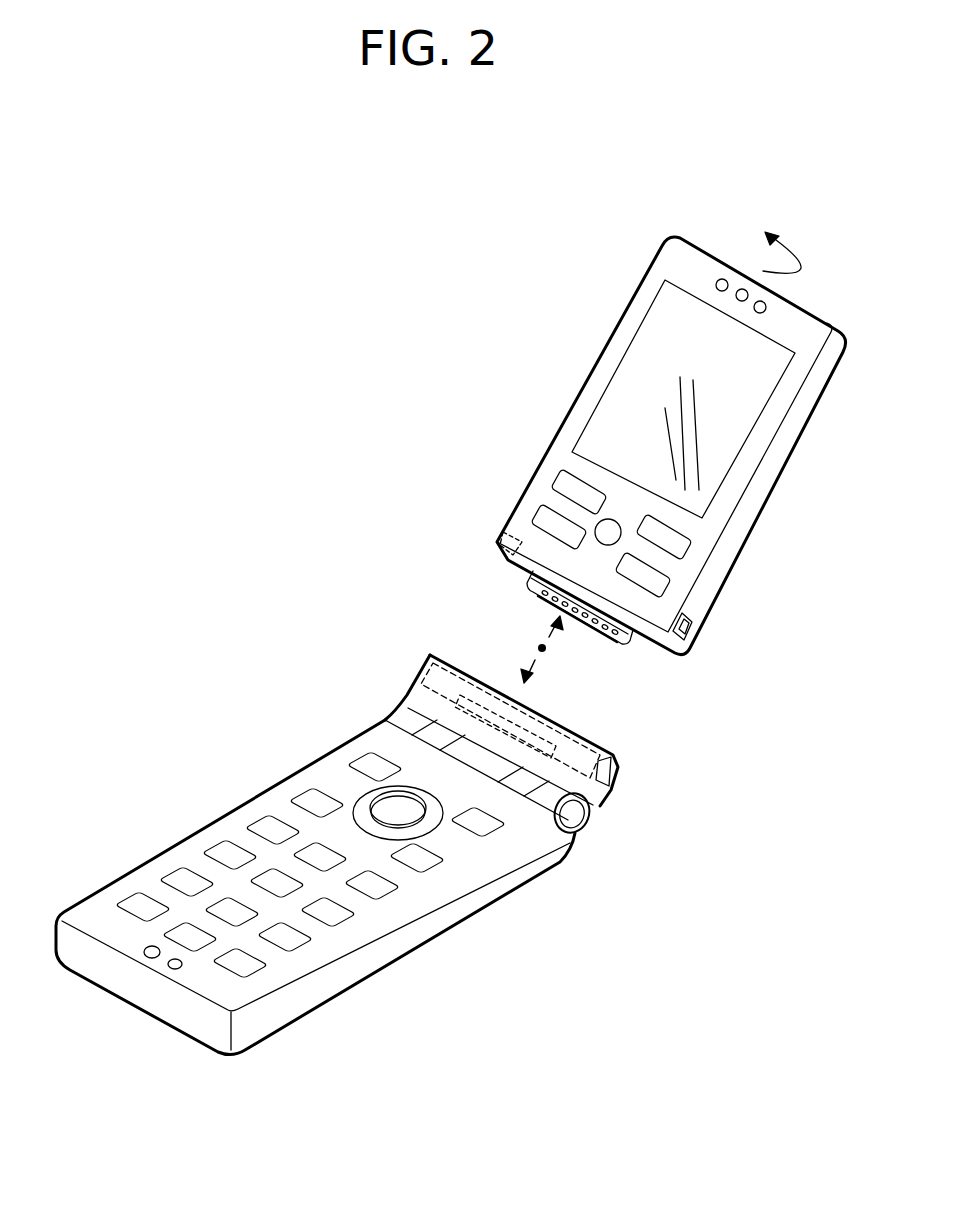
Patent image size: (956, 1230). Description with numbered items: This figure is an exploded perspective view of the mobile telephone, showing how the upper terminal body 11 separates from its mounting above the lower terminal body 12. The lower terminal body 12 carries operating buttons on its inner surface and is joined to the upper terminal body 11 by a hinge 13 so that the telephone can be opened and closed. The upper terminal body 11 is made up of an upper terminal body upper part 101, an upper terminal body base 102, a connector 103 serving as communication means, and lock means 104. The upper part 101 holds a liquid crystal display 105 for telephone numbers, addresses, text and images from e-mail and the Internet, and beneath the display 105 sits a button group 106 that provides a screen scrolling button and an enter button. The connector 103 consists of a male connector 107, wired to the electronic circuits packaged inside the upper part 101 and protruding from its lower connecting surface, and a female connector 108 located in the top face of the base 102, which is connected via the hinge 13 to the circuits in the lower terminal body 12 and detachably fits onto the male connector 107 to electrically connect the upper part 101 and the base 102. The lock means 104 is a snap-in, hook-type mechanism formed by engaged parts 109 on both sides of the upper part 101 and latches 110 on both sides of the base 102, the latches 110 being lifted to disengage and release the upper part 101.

The upper terminal body 11 is at (671, 234).
The lower terminal body 12 is at (392, 940).
The hinge 13 is at (577, 810).
The upper terminal body upper part 101 is at (742, 527).
The upper terminal body base 102 is at (610, 795).
The connector 103 is at (454, 639).
The lock means 104 is at (554, 602).
The liquid crystal display 105 is at (620, 387).
The button group 106 is at (667, 585).
The male connector 107 is at (537, 600).
The female connector 108 is at (493, 683).
The engaged parts 109 is at (500, 540).
The latches 110 is at (420, 672).